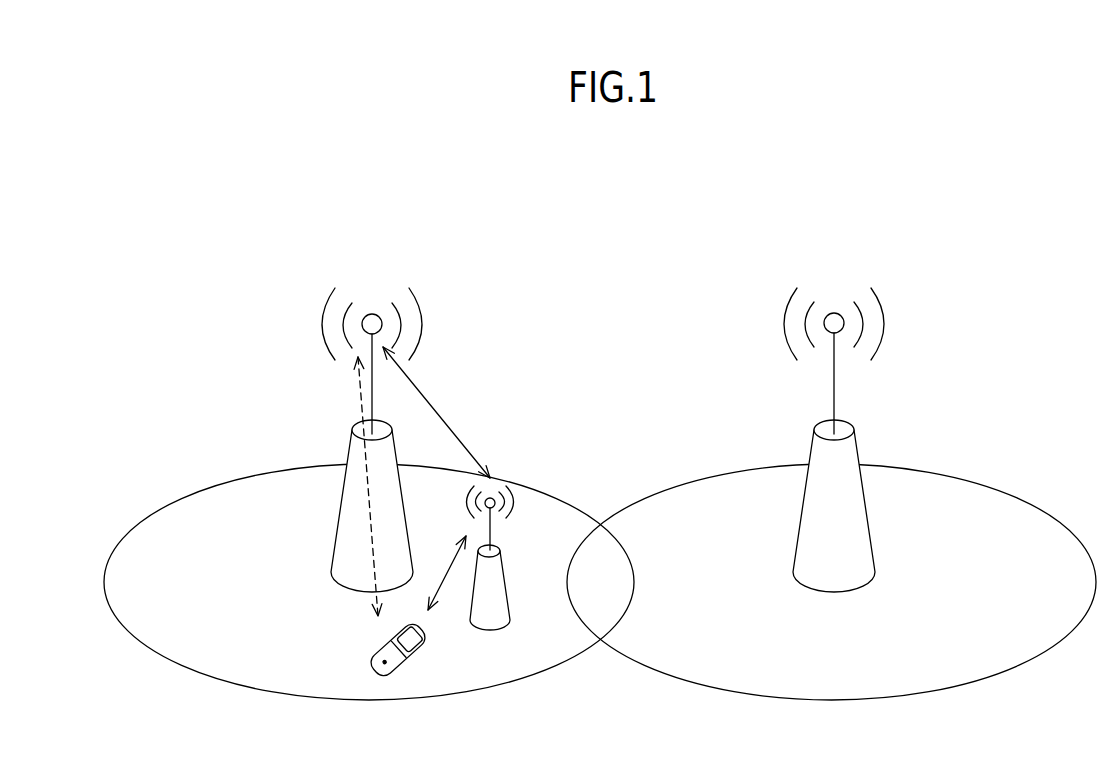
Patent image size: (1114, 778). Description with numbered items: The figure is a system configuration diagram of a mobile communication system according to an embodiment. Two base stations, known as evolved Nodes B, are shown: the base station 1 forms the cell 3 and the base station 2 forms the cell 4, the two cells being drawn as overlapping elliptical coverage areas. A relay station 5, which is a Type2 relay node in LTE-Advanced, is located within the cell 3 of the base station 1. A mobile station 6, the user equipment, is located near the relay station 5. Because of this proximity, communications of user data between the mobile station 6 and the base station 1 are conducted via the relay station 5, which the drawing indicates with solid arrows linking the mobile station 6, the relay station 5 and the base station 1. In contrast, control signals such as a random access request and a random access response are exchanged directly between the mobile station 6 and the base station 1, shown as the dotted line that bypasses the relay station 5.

The base station 1 is at (349, 452).
The base station 2 is at (811, 452).
The cell 3 is at (197, 490).
The cell 4 is at (660, 490).
The relay station 5 is at (507, 600).
The mobile station 6 is at (376, 656).